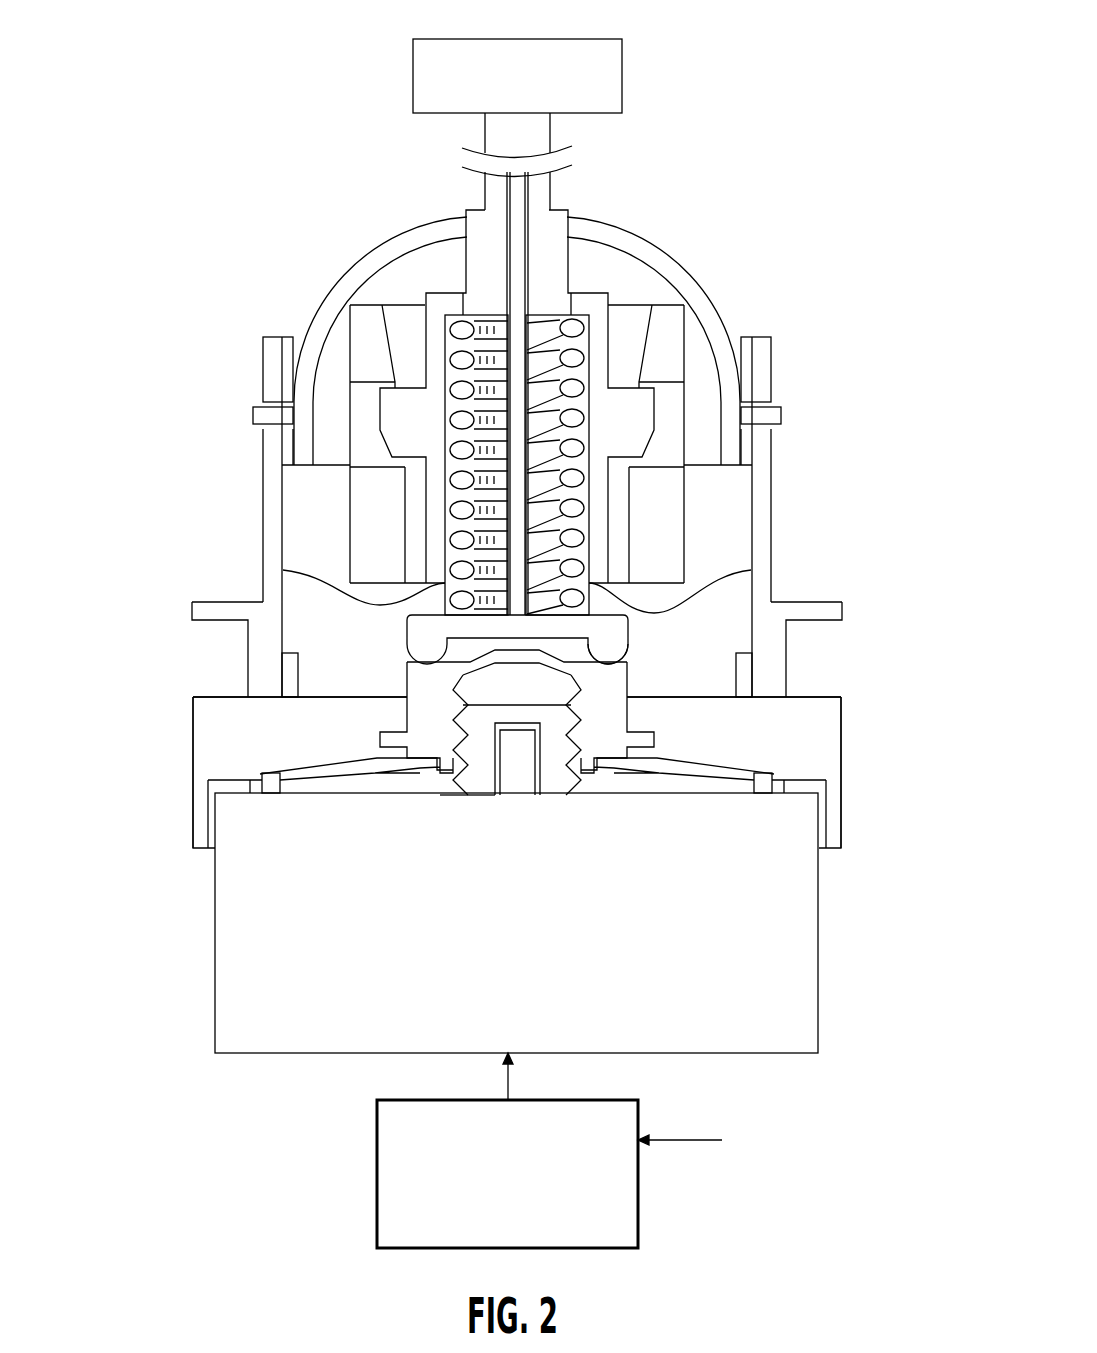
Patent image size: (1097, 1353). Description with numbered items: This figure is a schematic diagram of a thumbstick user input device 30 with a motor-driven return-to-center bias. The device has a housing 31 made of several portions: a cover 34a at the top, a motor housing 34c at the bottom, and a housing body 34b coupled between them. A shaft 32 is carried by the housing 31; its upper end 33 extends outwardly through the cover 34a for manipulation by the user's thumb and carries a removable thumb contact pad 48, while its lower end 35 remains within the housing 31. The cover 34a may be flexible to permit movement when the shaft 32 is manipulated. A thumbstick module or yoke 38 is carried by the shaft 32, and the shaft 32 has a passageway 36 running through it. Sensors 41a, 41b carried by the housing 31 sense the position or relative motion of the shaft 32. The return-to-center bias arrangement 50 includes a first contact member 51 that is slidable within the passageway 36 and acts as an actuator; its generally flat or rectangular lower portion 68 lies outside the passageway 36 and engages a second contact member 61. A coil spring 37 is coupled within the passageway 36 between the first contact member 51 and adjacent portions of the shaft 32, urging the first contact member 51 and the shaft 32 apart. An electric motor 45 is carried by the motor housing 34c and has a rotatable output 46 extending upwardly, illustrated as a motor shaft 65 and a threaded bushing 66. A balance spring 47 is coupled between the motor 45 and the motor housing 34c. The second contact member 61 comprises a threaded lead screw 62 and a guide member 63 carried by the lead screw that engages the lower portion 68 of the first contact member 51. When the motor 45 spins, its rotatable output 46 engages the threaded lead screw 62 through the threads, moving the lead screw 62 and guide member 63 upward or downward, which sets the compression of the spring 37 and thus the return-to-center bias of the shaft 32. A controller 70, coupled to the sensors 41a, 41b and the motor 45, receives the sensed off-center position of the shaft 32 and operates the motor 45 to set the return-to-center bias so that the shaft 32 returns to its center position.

The thumbstick user input device 30 is at (477, 426).
The removable thumb contact pad 48 is at (613, 87).
The upper end 33 is at (493, 203).
The shaft 32 is at (573, 273).
The cover 34a is at (330, 292).
The passageway 36 is at (582, 337).
The thumbstick module or yoke 38 is at (688, 340).
The housing 31 is at (477, 528).
The spring 37 is at (572, 446).
The housing body 34b is at (262, 498).
The lower end 35 is at (660, 612).
The return-to-center bias arrangement 50 is at (546, 762).
The first contact member 51 is at (403, 637).
The second contact member 61 is at (540, 811).
The lower portion 68 is at (620, 625).
The sensor 41a is at (287, 680).
The sensor 41b is at (745, 677).
The motor housing 34c is at (220, 762).
The guide member 63 is at (553, 648).
The threaded lead screw 62 is at (630, 720).
The motor shaft 65 is at (523, 782).
The balance spring 47 is at (310, 788).
The threaded bushing 66 is at (457, 797).
The rotatable output 46 is at (477, 797).
The motor 45 is at (750, 1025).
The controller 70 is at (375, 1160).